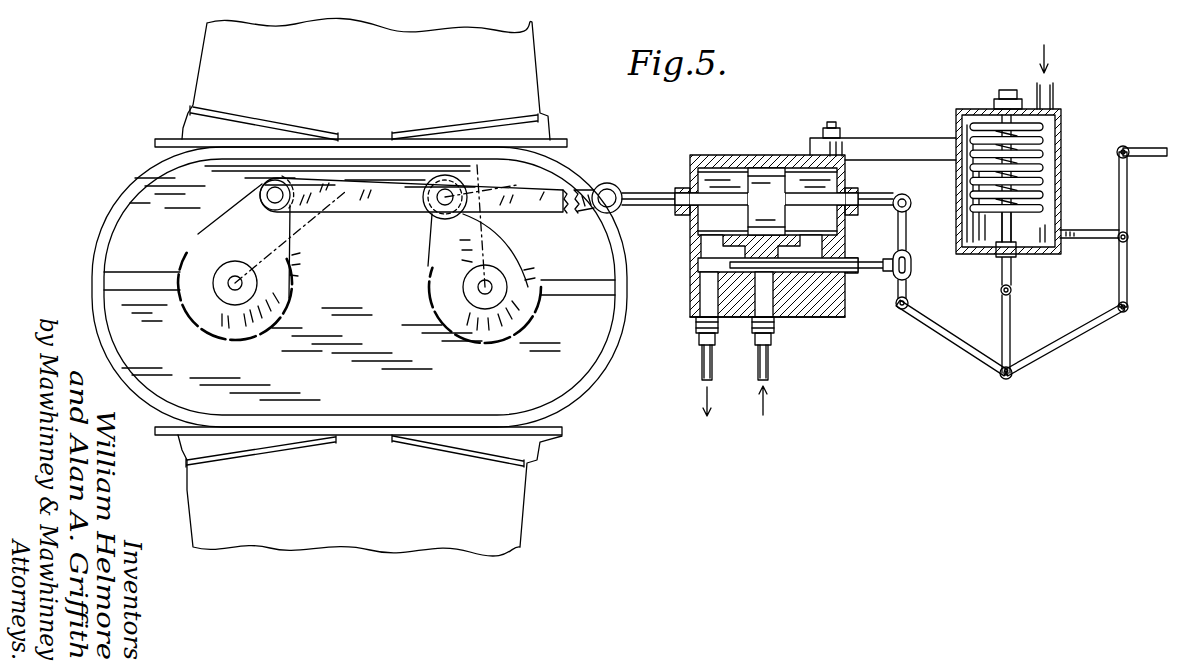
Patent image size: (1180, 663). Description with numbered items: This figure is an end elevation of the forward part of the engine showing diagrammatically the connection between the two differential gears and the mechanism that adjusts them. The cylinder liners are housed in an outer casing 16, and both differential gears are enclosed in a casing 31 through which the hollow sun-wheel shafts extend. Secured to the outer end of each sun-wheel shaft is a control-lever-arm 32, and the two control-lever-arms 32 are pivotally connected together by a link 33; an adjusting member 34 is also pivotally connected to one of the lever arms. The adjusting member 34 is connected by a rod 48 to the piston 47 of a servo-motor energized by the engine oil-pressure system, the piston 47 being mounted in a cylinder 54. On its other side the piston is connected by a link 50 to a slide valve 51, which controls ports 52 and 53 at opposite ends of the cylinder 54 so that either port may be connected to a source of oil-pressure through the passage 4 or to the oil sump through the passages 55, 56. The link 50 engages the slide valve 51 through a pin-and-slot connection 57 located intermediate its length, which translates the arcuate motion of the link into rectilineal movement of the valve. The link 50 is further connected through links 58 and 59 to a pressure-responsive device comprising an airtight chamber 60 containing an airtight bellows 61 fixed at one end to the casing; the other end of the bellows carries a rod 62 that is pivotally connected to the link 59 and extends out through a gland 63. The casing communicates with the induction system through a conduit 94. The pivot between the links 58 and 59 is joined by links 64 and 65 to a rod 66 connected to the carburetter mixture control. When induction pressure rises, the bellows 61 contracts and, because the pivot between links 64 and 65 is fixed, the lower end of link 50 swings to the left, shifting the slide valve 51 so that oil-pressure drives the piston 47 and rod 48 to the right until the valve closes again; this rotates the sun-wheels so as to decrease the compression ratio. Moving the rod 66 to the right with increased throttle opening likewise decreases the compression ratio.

The passage 4 is at (772, 300).
The outer casing 16 is at (515, 52).
The casing 31 is at (565, 370).
The control-lever-arm 32 is at (248, 224).
The link 33 is at (392, 216).
The adjusting member 34 is at (577, 206).
The piston 47 is at (763, 172).
The rod 48 is at (652, 192).
The link 50 is at (907, 232).
The slide valve 51 is at (850, 265).
The port 52 is at (706, 240).
The port 53 is at (830, 245).
The cylinder 54 is at (718, 156).
The passage 55 is at (706, 276).
The passage 56 is at (808, 300).
The pin-and-slot connection 57 is at (911, 266).
The link 58 is at (933, 330).
The link 59 is at (1010, 330).
The airtight chamber 60 is at (1062, 129).
The airtight bellows 61 is at (986, 125).
The rod 62 is at (1013, 278).
The gland 63 is at (995, 262).
The link 64 is at (1082, 331).
The link 65 is at (1120, 278).
The rod 66 is at (1140, 151).
The conduit 94 is at (1050, 93).